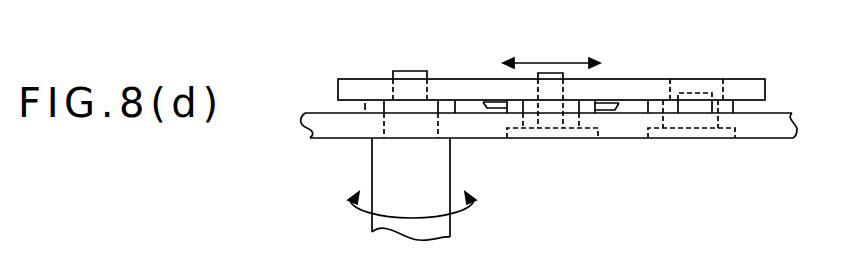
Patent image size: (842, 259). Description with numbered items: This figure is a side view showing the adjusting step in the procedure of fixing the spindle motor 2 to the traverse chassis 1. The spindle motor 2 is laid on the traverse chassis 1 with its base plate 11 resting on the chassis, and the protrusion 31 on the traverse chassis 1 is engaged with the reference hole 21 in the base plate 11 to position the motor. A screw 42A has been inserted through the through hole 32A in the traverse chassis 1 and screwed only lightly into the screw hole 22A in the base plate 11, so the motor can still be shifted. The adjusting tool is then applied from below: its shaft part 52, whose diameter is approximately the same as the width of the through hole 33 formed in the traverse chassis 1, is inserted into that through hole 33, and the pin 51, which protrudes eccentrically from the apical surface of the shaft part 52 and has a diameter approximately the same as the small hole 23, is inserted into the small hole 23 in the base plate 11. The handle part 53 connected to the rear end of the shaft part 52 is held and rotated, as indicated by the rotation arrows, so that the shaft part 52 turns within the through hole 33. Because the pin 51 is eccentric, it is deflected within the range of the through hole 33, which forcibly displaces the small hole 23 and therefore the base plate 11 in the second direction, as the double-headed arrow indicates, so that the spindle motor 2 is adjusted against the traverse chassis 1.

The traverse chassis 1 is at (779, 115).
The base plate 11 is at (752, 83).
The spindle motor 2 is at (573, 66).
The pin 51 is at (412, 71).
The small hole 23 is at (392, 88).
The screw hole 22A is at (537, 92).
The shaft part 52 is at (368, 107).
The through hole 33 is at (383, 121).
The handle part 53 is at (381, 181).
The screw 42A is at (531, 128).
The through hole 32A is at (578, 120).
The reference hole 21 is at (724, 90).
The protrusion 31 is at (691, 92).